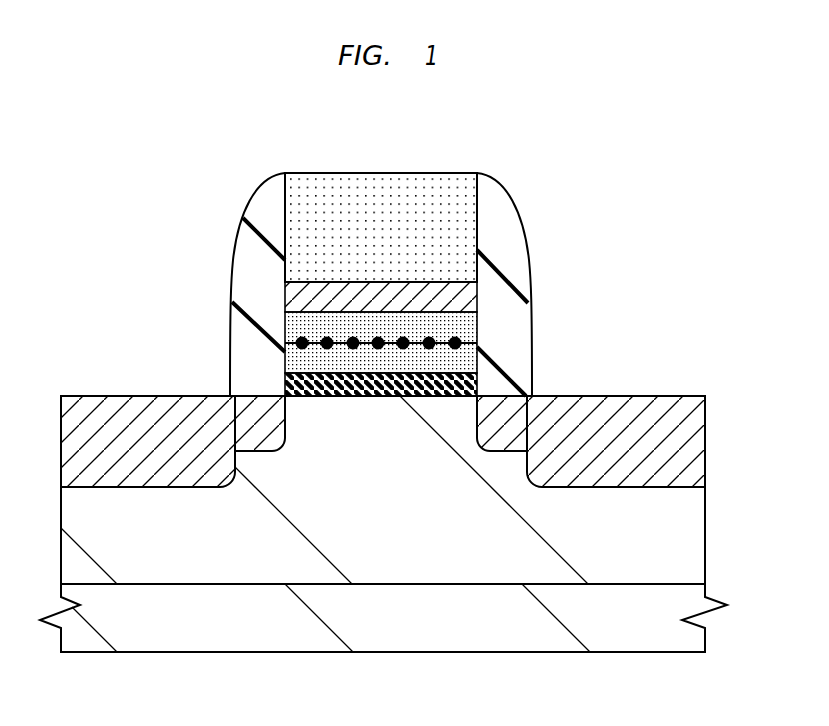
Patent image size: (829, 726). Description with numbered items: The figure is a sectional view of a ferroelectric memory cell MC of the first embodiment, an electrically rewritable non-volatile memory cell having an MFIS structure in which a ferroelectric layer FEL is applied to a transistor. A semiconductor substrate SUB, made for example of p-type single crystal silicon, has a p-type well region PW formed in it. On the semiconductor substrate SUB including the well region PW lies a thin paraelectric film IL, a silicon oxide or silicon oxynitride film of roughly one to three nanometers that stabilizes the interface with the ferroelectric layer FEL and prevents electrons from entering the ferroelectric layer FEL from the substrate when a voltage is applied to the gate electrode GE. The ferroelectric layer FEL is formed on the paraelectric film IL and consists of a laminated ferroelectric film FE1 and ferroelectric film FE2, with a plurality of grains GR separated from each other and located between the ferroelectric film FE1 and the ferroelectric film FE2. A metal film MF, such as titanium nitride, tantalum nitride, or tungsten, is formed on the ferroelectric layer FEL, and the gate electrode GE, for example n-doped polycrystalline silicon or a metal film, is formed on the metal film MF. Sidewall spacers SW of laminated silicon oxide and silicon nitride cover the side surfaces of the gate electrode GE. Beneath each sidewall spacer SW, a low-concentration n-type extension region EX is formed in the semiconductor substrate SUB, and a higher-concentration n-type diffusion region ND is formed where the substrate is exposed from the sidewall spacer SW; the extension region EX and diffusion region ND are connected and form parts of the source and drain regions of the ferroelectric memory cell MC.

The ferroelectric memory cell MC is at (138, 212).
The sidewall spacer SW is at (258, 218).
The gate electrode GE is at (378, 197).
The metal film MF is at (303, 296).
The ferroelectric film FE2 is at (447, 319).
The grains GR is at (450, 338).
The ferroelectric film FE1 is at (447, 363).
The ferroelectric layer FEL is at (494, 350).
The paraelectric film IL is at (308, 388).
The p-type well region PW is at (692, 536).
The semiconductor substrate SUB is at (692, 636).
The diffusion region ND is at (145, 460).
The extension region EX is at (260, 438).